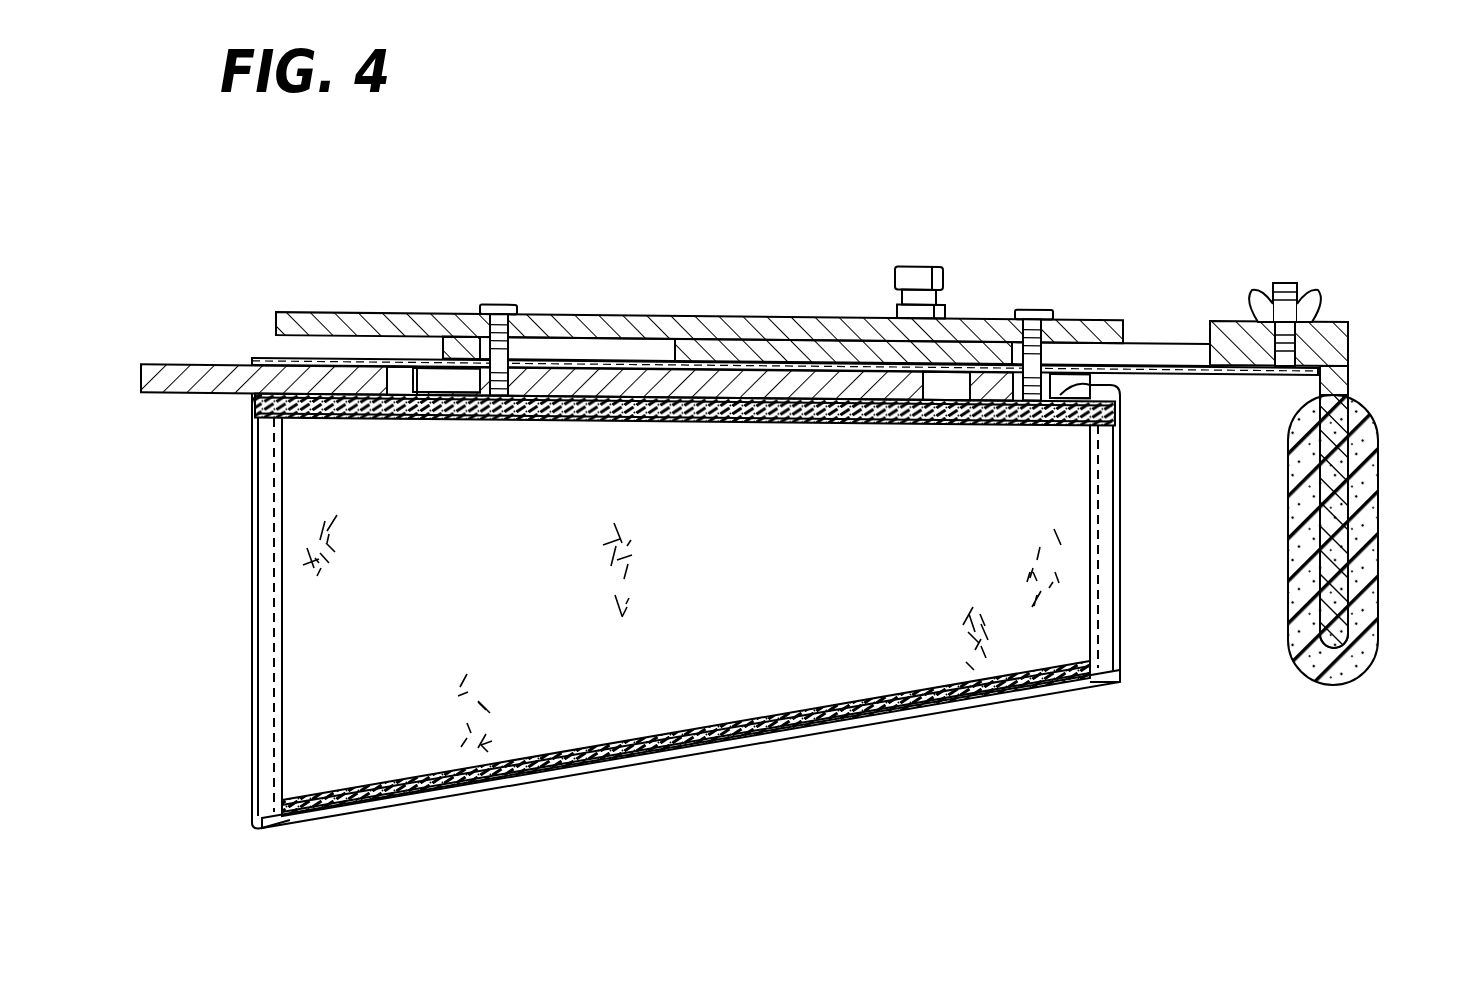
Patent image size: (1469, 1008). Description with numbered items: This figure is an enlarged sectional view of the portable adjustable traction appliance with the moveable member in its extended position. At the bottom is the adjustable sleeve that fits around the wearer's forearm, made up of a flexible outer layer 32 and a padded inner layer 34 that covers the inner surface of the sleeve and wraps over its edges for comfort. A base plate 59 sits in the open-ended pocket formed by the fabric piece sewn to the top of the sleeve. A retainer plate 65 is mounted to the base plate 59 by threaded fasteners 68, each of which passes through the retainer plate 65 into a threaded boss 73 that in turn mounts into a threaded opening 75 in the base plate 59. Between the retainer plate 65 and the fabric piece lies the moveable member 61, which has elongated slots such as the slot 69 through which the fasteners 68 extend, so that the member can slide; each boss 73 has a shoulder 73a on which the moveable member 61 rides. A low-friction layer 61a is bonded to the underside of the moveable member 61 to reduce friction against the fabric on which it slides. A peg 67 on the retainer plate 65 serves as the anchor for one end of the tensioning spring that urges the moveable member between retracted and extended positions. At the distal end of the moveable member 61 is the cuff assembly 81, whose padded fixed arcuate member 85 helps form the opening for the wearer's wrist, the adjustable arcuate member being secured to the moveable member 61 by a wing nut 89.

The outer layer 32 is at (760, 725).
The padded inner layer 34 is at (345, 420).
The base plate 59 is at (155, 378).
The moveable member 61 is at (716, 348).
The low-friction layer 61a is at (776, 356).
The retainer plate 65 is at (640, 318).
The peg 67 is at (922, 267).
The threaded fasteners 68 is at (500, 303).
The elongated slot 69 is at (578, 346).
The threaded boss 73 is at (505, 386).
The shoulder 73a is at (480, 396).
The threaded opening 75 is at (405, 375).
The cuff assembly 81 is at (1358, 302).
The fixed arcuate member 85 is at (1380, 430).
The wing nut 89 is at (1316, 296).